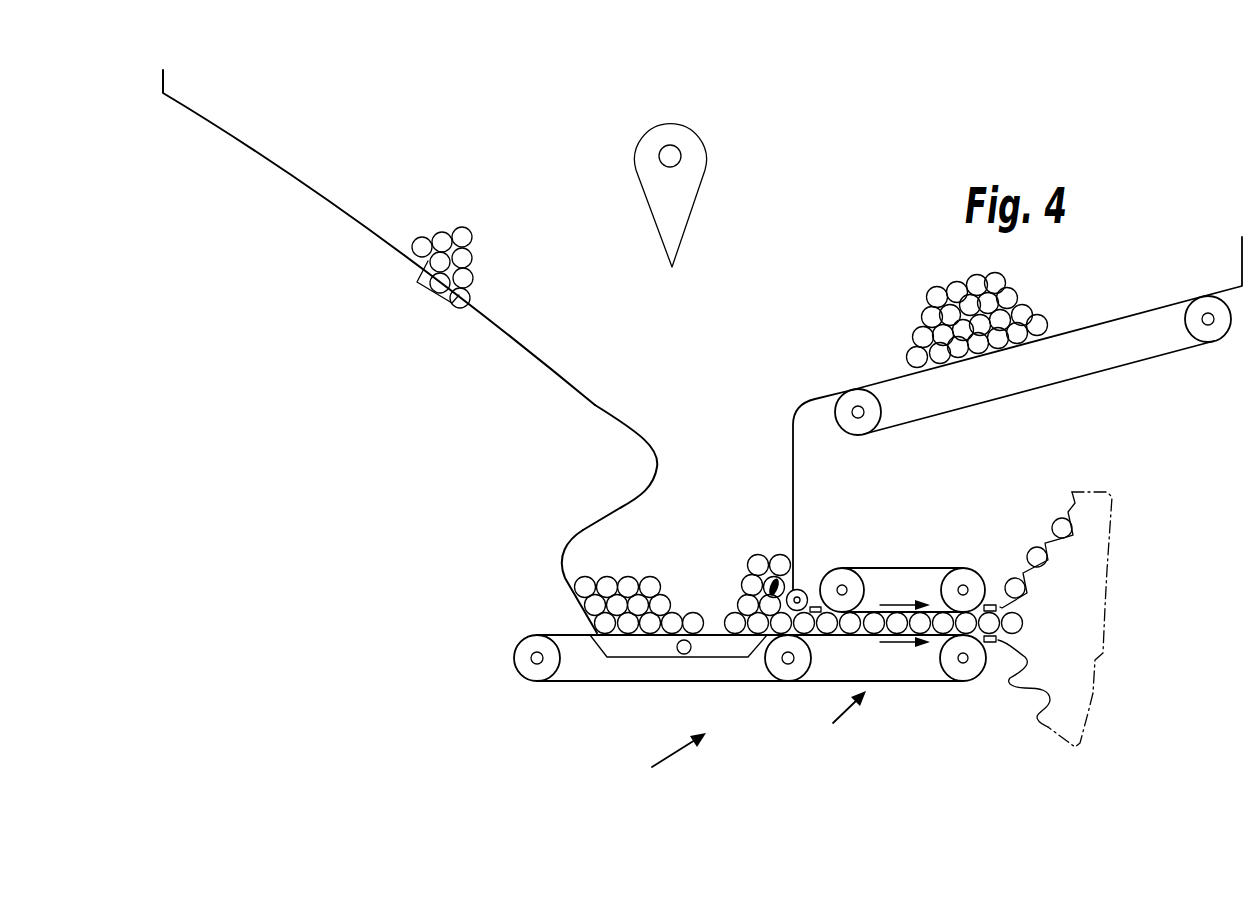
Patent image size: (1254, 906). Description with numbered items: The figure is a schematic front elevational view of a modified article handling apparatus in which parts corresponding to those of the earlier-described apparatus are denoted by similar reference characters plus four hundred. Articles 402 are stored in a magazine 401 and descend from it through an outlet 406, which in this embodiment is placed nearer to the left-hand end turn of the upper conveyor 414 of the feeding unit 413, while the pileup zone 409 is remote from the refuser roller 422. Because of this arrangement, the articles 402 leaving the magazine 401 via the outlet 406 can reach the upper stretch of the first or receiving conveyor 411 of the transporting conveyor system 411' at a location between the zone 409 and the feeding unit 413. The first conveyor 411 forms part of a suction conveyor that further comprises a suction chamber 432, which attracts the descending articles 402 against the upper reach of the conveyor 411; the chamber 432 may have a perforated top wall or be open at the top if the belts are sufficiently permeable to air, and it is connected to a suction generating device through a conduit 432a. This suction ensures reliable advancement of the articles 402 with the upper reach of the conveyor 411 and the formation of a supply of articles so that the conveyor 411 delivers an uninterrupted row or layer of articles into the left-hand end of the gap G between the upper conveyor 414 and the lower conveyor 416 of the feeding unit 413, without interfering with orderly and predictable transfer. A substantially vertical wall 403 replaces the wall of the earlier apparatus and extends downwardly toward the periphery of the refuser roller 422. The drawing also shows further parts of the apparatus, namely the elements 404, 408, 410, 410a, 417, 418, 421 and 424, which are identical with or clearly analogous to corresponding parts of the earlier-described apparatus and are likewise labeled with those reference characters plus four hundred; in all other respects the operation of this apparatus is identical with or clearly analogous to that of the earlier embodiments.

The magazine 401 is at (300, 163).
The articles 402 is at (468, 236).
The substantially vertical wall 403 is at (792, 487).
The ledge / stop on chute 404 is at (388, 244).
The outlet 406 is at (672, 468).
The pendulum guide 408 is at (693, 182).
The pileup zone 409 is at (598, 535).
The roller 410 is at (795, 680).
The roller shaft 410a is at (786, 660).
The first or receiving conveyor 411 is at (651, 679).
The transporting conveyor system 411' is at (655, 763).
The feeding unit 413 is at (840, 726).
The upper conveyor 414 is at (925, 570).
The lower conveyor 416 is at (888, 682).
The stop members 417 is at (1000, 605).
The receiving station (boundary) 418 is at (1100, 566).
The wavy guide wall 421 is at (1038, 697).
The refuser roller 422 is at (800, 590).
The inclined feed conveyor 424 is at (1090, 362).
The suction chamber 432 is at (637, 657).
The conduit 432a is at (684, 654).
The gap G is at (863, 618).